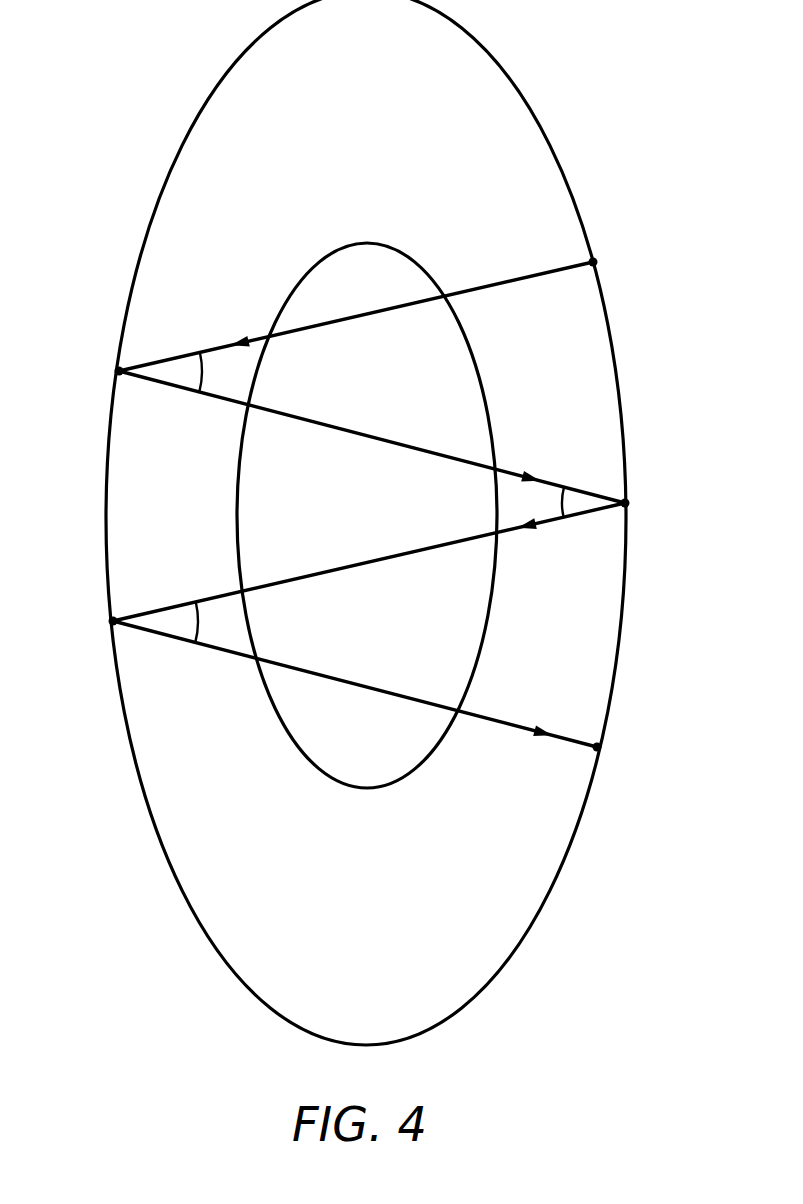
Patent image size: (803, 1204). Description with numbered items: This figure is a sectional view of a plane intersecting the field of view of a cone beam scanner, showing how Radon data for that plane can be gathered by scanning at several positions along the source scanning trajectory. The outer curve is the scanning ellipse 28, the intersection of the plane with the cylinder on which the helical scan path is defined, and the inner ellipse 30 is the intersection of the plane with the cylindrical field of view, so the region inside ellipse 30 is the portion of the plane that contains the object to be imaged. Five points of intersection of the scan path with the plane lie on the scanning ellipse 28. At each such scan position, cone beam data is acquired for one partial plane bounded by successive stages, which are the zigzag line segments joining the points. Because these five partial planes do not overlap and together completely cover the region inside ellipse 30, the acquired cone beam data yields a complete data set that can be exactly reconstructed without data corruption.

The scanning ellipse 28 is at (521, 88).
The ellipse 30 is at (369, 243).